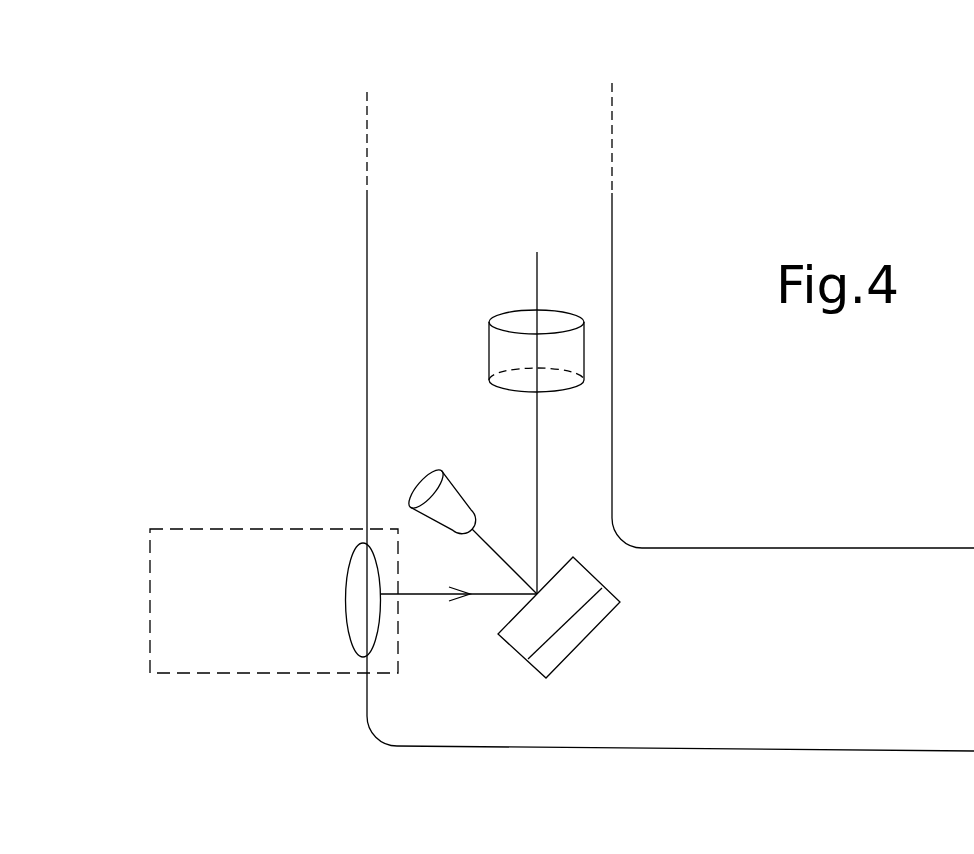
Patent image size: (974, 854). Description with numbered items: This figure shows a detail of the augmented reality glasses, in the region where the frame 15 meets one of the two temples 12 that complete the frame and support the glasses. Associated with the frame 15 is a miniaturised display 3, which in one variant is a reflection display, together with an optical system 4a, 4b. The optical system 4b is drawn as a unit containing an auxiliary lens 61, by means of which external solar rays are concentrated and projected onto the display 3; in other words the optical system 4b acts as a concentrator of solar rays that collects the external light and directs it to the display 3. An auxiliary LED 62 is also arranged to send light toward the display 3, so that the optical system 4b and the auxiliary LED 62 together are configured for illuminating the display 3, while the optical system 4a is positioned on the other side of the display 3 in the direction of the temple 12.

The temples 12 is at (473, 193).
The frame 15 is at (366, 295).
The optical system 4a is at (568, 352).
The auxiliary LED 62 is at (425, 487).
The auxiliary lens 61 is at (346, 585).
The optical system 4b is at (228, 676).
The miniaturised display 3 is at (587, 642).